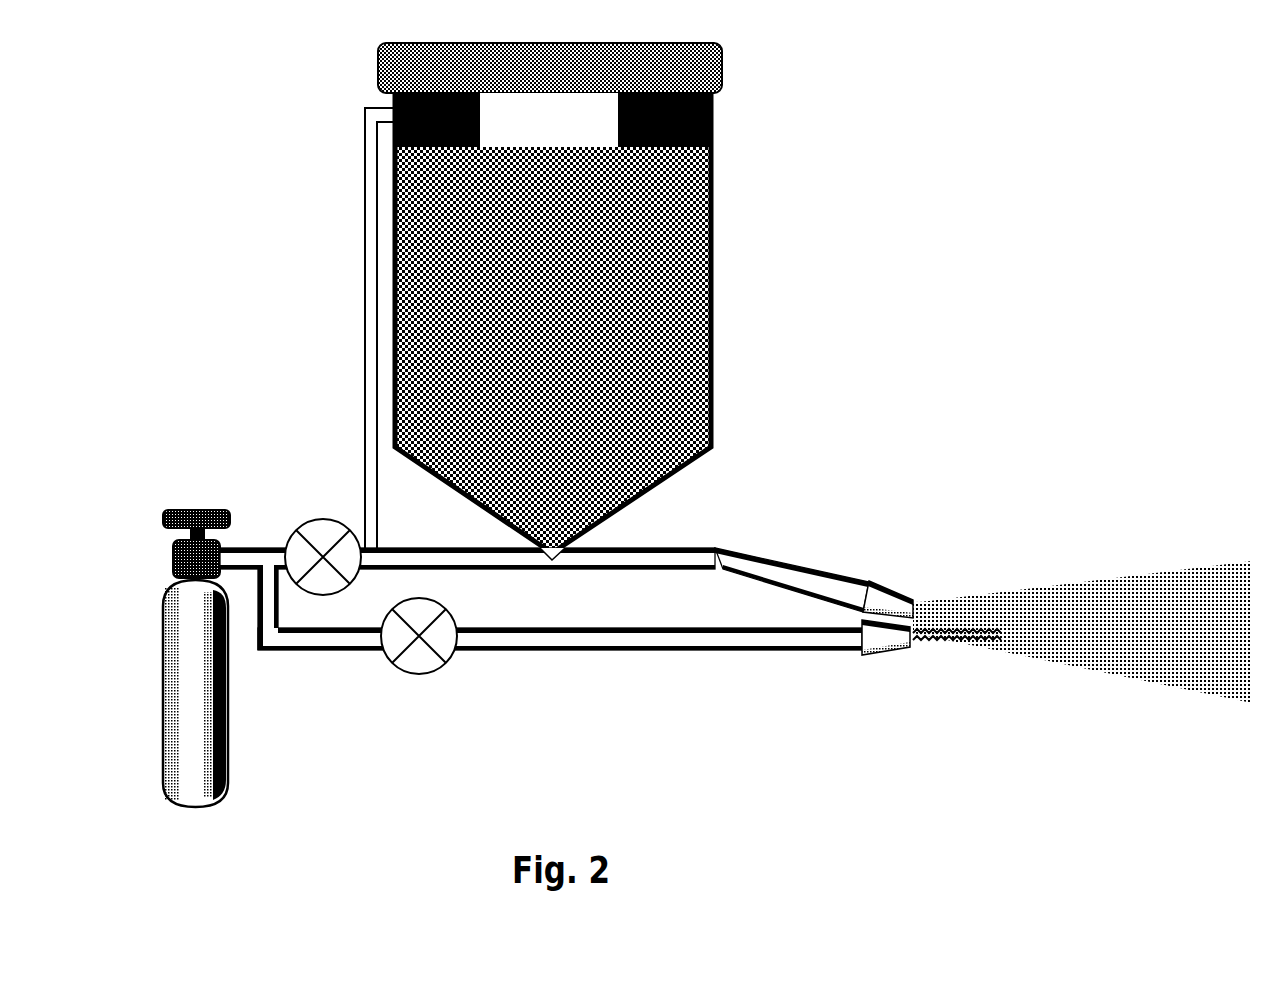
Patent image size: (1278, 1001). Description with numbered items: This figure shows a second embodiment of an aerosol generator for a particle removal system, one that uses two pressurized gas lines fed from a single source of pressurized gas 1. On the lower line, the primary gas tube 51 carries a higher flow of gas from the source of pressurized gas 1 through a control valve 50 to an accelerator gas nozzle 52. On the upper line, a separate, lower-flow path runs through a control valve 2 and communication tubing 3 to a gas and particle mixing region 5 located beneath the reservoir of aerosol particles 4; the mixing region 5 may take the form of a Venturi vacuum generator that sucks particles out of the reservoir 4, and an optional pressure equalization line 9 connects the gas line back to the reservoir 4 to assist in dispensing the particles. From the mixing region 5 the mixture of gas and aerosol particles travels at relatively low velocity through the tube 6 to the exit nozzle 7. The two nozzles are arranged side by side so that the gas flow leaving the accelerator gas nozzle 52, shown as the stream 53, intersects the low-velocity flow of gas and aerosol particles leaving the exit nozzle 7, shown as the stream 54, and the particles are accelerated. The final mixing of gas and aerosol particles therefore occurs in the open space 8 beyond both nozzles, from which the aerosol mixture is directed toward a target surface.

The source of pressurized gas 1 is at (163, 648).
The control valve 2 is at (318, 521).
The communication tubing 3 is at (247, 548).
The reservoir of aerosol particles 4 is at (392, 270).
The gas and particle mixing region 5 is at (552, 572).
The tube 6 is at (781, 562).
The exit nozzle 7 is at (887, 588).
The open space 8 is at (1066, 610).
The pressure equalization line 9 is at (365, 325).
The control valve 50 is at (420, 675).
The primary gas tube 51 is at (678, 652).
The accelerator gas nozzle 52 is at (890, 660).
The liquid stream 53 is at (927, 645).
The powder gas jet 54 is at (948, 605).